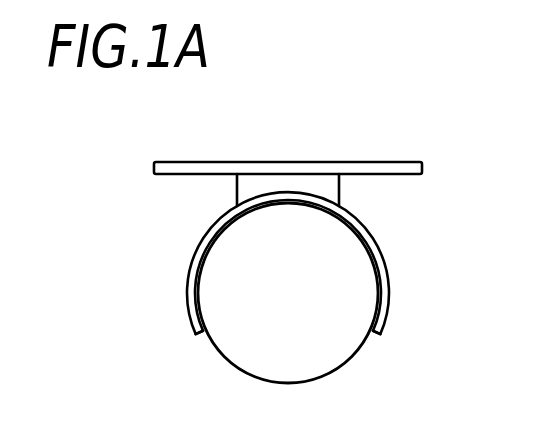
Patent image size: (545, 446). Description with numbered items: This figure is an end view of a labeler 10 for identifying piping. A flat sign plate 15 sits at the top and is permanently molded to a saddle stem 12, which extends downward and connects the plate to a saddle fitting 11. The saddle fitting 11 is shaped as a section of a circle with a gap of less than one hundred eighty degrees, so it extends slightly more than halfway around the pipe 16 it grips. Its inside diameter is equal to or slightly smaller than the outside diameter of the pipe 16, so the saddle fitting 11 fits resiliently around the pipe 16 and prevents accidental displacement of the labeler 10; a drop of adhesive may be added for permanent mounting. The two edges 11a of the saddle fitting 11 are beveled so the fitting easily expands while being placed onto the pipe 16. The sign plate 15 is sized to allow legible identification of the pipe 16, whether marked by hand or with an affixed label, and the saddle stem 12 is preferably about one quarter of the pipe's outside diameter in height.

The labeler 10 is at (300, 104).
The sign plate 15 is at (422, 165).
The saddle stem 12 is at (343, 186).
The saddle fitting 11 is at (391, 267).
The edges 11a is at (383, 332).
The pipe 16 is at (328, 375).